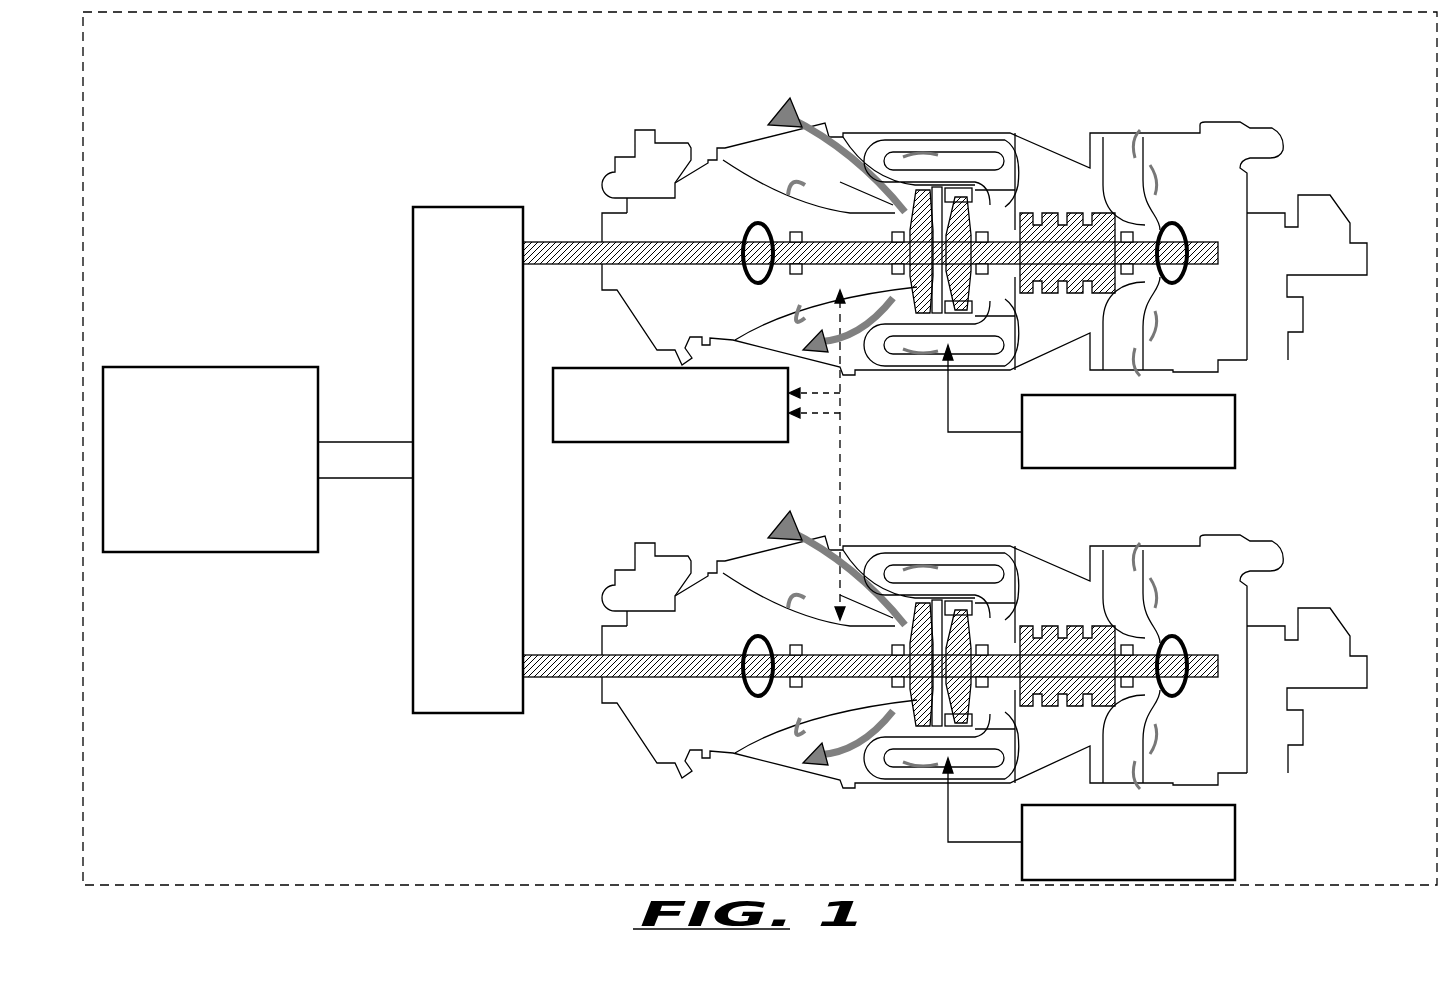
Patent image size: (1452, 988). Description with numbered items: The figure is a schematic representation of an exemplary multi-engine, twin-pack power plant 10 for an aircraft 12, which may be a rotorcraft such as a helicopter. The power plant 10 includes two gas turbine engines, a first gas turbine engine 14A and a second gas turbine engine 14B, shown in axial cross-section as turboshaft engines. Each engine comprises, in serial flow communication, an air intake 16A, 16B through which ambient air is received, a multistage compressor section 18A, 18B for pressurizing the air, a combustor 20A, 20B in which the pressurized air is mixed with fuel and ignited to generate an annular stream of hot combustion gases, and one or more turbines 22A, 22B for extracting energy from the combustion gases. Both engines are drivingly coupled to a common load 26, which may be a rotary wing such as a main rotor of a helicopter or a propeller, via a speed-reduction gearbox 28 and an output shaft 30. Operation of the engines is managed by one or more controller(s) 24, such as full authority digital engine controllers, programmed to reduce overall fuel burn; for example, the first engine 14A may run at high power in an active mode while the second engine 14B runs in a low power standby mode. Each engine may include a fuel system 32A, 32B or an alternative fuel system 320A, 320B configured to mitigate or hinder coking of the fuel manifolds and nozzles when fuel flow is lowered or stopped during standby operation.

The multi-engine power plant 10 is at (300, 160).
The aircraft 12 is at (283, 875).
The first gas turbine engine 14A is at (941, 200).
The second gas turbine engine 14B is at (945, 620).
The air intake 16A is at (1143, 152).
The air intake 16B is at (1147, 636).
The multistage compressor section 18A is at (1050, 205).
The multistage compressor section 18B is at (1067, 599).
The combustor 20A is at (958, 165).
The combustor 20B is at (931, 619).
The turbine 22A is at (920, 190).
The turbine 22B is at (932, 610).
The controller 24 is at (705, 443).
The common load 26 is at (215, 366).
The gearbox 28 is at (413, 642).
The output shaft 30 is at (366, 440).
The fuel system 32A is at (1190, 406).
The fuel system 320A is at (1238, 432).
The fuel system 32B is at (1190, 819).
The fuel system 320B is at (1238, 842).